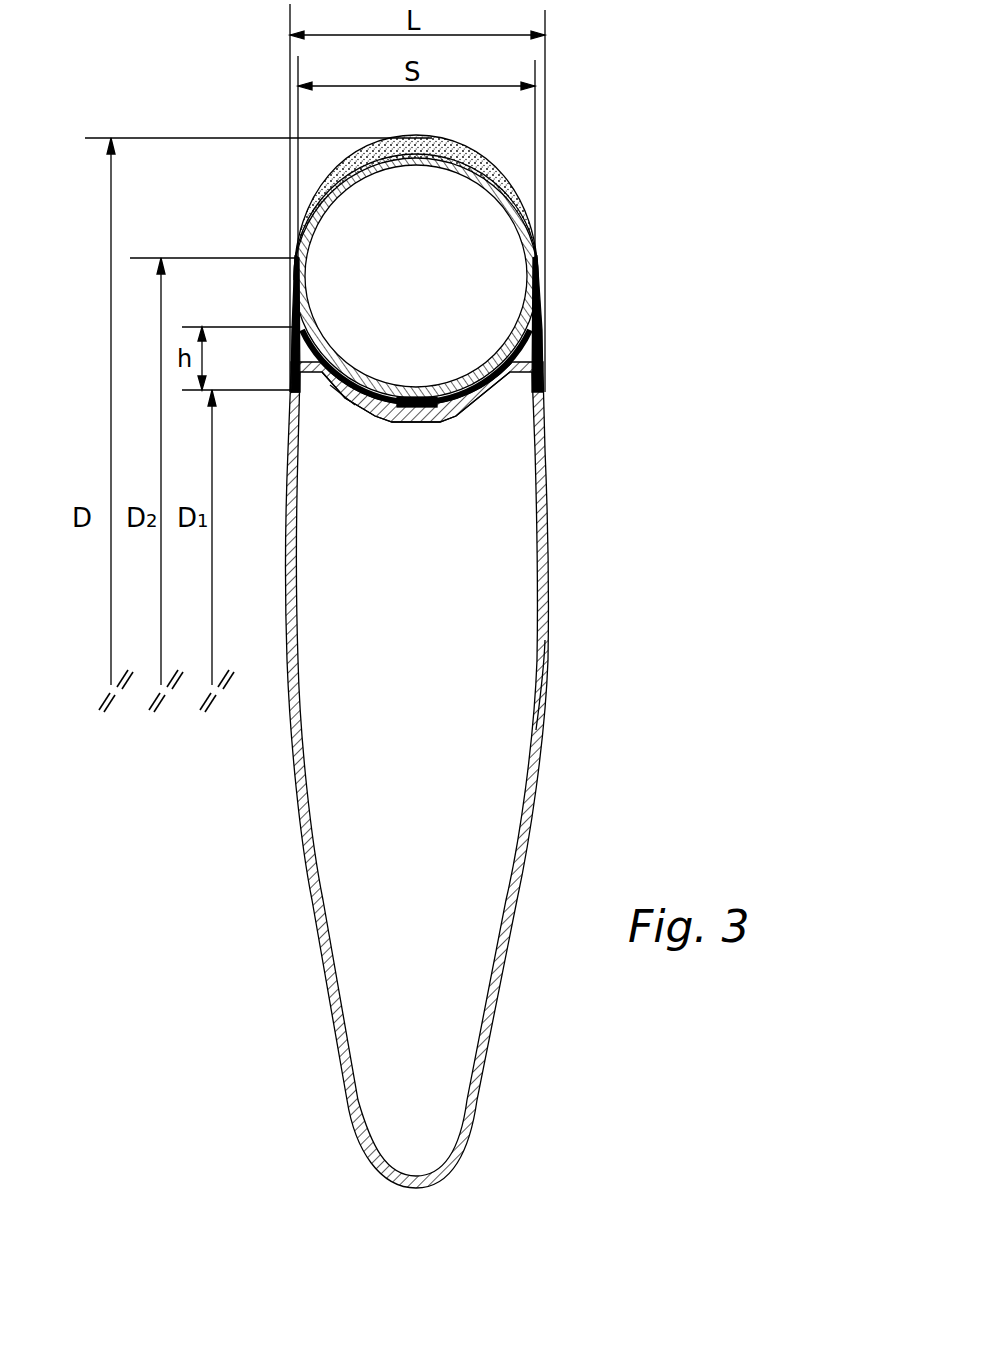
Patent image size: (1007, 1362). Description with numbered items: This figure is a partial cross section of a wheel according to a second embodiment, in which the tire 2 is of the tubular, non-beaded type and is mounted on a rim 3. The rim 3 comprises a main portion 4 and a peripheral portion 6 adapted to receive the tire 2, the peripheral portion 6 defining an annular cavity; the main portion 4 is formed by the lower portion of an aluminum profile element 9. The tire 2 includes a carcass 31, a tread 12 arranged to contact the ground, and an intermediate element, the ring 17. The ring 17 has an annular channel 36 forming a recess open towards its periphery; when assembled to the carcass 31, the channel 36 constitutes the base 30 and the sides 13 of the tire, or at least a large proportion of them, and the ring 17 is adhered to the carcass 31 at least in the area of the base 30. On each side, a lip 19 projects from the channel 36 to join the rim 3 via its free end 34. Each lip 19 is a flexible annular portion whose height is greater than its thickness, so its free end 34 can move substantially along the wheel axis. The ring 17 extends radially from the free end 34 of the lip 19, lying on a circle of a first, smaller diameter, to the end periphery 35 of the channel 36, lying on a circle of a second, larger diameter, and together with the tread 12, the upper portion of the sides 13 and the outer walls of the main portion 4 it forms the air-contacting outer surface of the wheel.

The tire 2 is at (517, 271).
The rim 3 is at (474, 688).
The main portion 4 is at (543, 518).
The peripheral portion 6 is at (470, 392).
The profile element 9 is at (537, 700).
The tread 12 is at (513, 192).
The sides 13 is at (533, 257).
The ring 17 is at (296, 333).
The lips 19 is at (292, 353).
The base 30 is at (490, 360).
The carcass 31 is at (542, 273).
The free end 34 is at (296, 392).
The end periphery 35 is at (297, 253).
The annular channel 36 is at (341, 392).